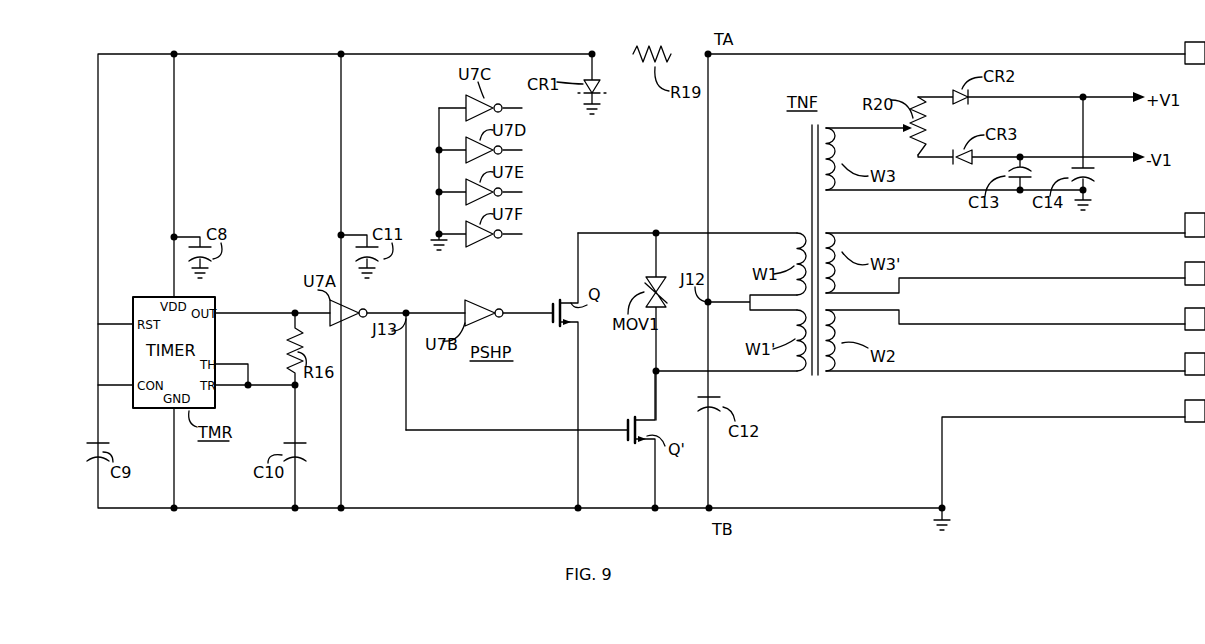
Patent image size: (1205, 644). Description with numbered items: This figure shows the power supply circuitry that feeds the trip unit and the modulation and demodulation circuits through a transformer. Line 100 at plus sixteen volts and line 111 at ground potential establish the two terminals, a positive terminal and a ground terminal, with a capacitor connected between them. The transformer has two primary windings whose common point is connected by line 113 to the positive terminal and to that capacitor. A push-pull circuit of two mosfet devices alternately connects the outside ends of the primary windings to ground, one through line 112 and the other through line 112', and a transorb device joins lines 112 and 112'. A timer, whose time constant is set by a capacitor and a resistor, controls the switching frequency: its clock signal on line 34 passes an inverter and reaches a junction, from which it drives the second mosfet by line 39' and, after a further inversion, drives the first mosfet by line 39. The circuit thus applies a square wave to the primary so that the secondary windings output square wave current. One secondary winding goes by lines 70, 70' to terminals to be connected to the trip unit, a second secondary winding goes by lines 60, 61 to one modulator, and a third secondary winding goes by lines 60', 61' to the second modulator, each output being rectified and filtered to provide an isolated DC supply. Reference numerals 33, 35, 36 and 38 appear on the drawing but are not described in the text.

The line 100 is at (238, 54).
The reset line 33 is at (99, 278).
The line 34 is at (269, 312).
The trigger/threshold line 35 is at (271, 388).
The timer ground lead 36 is at (175, 464).
The inverter output node line 38 is at (388, 313).
The line 39 is at (528, 297).
The line 39' is at (517, 413).
The line 60 is at (1031, 108).
The line 61 is at (1033, 168).
The line 60' is at (1015, 222).
The line 61' is at (1015, 271).
The line 70 is at (1015, 312).
The line 70' is at (1015, 359).
The line 111 is at (1128, 417).
The line 112 is at (687, 215).
The line 112' is at (725, 360).
The line 113 is at (709, 118).